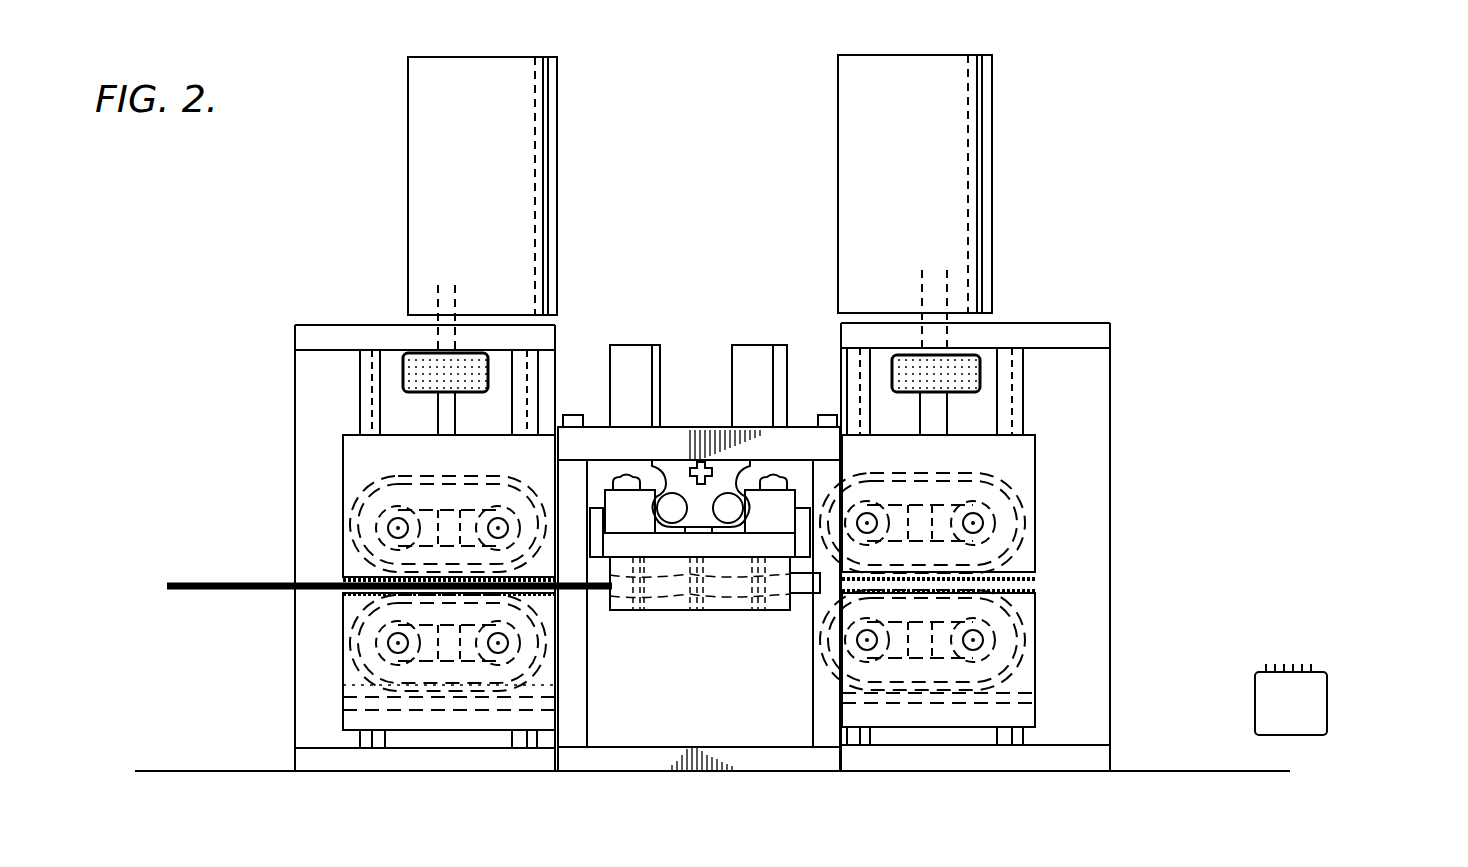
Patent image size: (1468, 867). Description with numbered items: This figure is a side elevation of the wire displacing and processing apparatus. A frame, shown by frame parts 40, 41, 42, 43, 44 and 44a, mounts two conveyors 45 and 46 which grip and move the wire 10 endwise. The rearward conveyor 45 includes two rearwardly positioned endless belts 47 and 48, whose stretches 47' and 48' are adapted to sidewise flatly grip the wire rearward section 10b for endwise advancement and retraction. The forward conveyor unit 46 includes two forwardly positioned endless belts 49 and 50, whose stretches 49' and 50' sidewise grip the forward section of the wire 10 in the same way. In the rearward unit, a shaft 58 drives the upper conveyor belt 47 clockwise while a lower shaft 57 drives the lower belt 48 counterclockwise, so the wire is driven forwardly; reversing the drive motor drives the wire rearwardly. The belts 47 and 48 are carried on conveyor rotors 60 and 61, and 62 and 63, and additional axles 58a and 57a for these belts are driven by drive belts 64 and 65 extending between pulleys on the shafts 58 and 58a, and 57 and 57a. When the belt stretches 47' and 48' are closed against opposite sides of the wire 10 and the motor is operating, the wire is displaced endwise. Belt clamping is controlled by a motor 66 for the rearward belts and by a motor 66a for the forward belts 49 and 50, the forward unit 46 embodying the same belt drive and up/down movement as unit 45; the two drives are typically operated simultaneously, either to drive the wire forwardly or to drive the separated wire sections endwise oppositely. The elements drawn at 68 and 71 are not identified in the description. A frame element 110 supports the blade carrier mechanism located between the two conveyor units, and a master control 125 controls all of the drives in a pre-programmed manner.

The wire 10 is at (192, 582).
The wire rearward section 10b is at (505, 628).
The frame 40 is at (318, 337).
The frame 41 is at (1086, 326).
The frame 42 is at (318, 780).
The frame 43 is at (975, 757).
The frame 44 is at (1097, 376).
The frame 44a is at (305, 410).
The conveyor 45 is at (337, 605).
The forward conveyor unit 46 is at (1045, 515).
The endless belt 47 is at (383, 524).
The belt stretch 47' is at (385, 525).
The endless belt 48 is at (383, 655).
The belt stretch 48' is at (387, 643).
The endless belt 49 is at (994, 507).
The belt stretch 49' is at (1001, 524).
The endless belt 50 is at (1004, 660).
The belt stretch 50' is at (957, 640).
The lower shaft 57 is at (392, 646).
The axle 57a is at (512, 655).
The shaft 58 is at (392, 520).
The axle 58a is at (503, 512).
The conveyor rotor 60 is at (437, 500).
The conveyor rotor 61 is at (467, 483).
The conveyor rotor 62 is at (433, 673).
The conveyor rotor 63 is at (465, 673).
The drive belt 64 is at (395, 487).
The drive belt 65 is at (385, 688).
The motor 66 is at (488, 186).
The motor 66a is at (912, 186).
The pressure pad 68 is at (435, 405).
The cylinder rods 71 is at (472, 353).
The frame element 110 is at (692, 430).
The master control 125 is at (1313, 707).